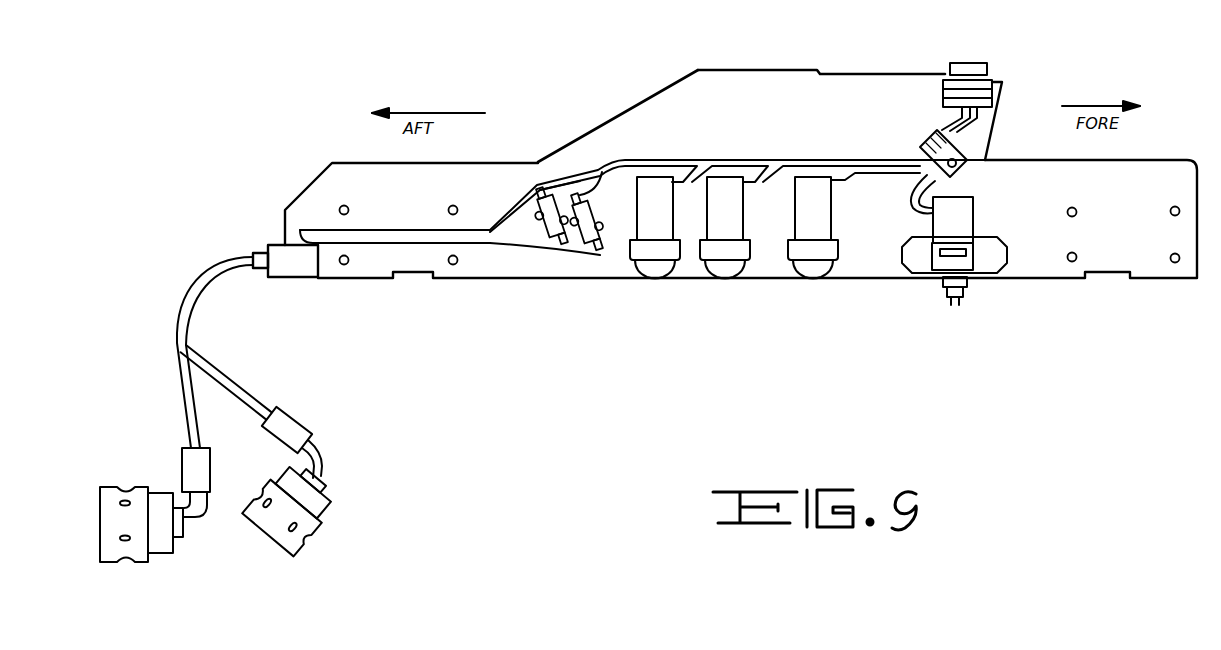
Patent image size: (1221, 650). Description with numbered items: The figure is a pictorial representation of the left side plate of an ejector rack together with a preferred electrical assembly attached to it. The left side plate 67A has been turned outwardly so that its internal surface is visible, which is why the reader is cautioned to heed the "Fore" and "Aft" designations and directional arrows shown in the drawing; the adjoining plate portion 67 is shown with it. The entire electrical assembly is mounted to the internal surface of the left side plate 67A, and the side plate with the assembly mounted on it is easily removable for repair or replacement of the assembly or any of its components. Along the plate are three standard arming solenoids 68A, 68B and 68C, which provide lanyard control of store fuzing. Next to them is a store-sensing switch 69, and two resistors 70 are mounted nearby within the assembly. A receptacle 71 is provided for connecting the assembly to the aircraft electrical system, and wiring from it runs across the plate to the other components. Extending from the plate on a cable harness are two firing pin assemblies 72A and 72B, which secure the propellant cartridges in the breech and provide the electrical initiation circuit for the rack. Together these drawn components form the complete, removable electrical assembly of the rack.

The mounting bracket 67 is at (633, 118).
The left side plate 67A is at (757, 83).
The arming solenoid 68A is at (658, 278).
The arming solenoid 68B is at (728, 279).
The arming solenoid 68C is at (813, 279).
The store-sensing switch 69 is at (970, 213).
The resistors 70 is at (542, 226).
The receptacle 71 is at (992, 66).
The firing pin assembly 72A is at (100, 527).
The firing pin assembly 72B is at (293, 560).